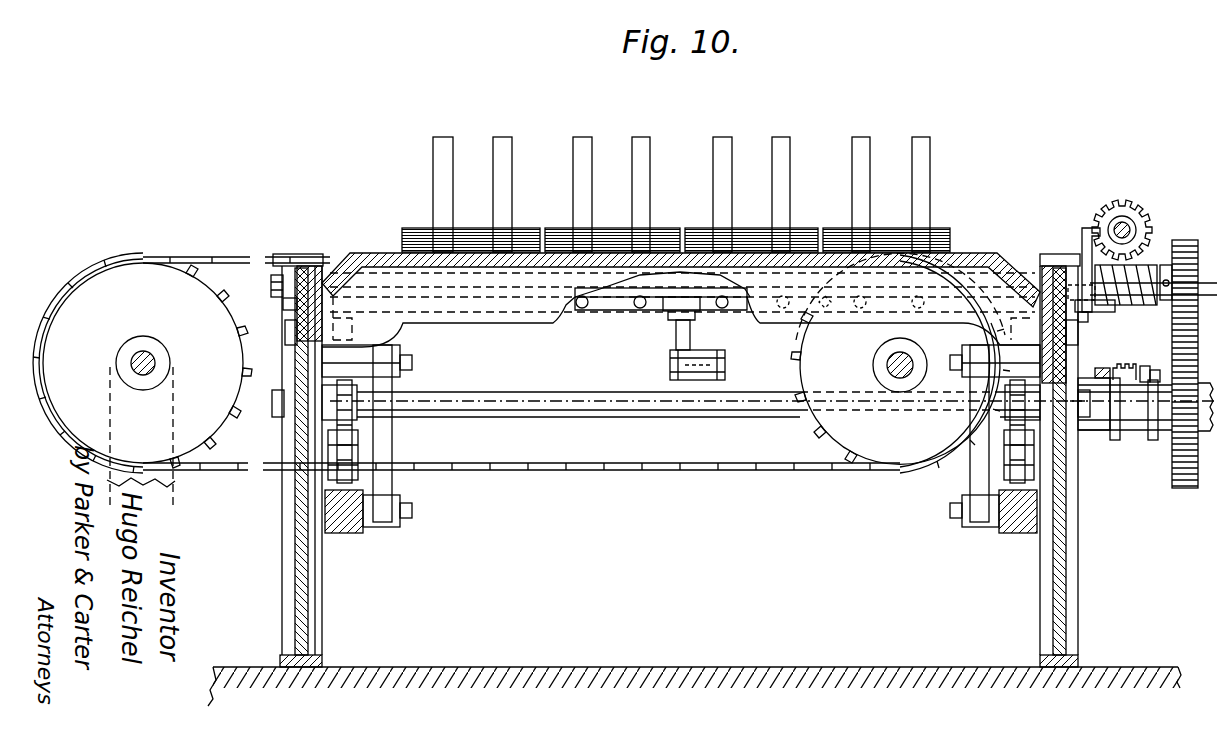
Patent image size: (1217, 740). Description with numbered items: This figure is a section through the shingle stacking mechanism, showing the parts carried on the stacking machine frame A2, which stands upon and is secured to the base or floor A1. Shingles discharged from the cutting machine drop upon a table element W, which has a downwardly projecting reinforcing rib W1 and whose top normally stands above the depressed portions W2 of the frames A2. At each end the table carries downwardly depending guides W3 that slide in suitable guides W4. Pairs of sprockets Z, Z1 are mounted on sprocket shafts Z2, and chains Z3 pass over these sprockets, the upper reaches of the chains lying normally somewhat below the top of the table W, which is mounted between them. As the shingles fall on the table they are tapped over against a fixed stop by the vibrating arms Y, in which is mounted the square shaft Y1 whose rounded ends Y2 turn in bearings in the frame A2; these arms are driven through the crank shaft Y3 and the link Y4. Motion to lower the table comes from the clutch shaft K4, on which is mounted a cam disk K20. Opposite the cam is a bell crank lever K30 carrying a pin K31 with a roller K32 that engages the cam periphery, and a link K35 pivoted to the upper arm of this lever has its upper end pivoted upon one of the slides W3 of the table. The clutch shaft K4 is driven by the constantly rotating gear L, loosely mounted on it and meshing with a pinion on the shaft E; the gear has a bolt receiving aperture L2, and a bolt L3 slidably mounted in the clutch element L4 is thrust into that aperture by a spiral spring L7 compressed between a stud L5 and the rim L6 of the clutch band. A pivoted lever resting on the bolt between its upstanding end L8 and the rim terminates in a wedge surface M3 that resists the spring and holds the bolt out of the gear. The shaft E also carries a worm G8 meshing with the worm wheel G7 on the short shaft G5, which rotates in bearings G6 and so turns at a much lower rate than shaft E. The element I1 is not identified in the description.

The base or floor A1 is at (520, 667).
The stacking machine frame A2 is at (310, 588).
The shaft E is at (620, 290).
The short shaft G5 is at (1120, 225).
The bearings G6 is at (1112, 226).
The worm wheel G7 is at (1125, 222).
The worm G8 is at (1140, 268).
The shaft I1 is at (1178, 280).
The clutch shaft K4 is at (613, 422).
The cam disk K20 is at (337, 480).
The bell crank lever K30 is at (345, 533).
The pin K31 is at (358, 478).
The roller K32 is at (375, 400).
The link K35 is at (392, 437).
The gear L is at (1186, 488).
The bolt receiving aperture L2 is at (1155, 440).
The bolt L3 is at (1155, 372).
The clutch element L4 is at (1143, 433).
The stud L5 is at (1145, 366).
The rim L6 is at (1118, 440).
The spiral spring L7 is at (1125, 367).
The upstanding end L8 is at (1098, 370).
The wedge surface M3 is at (1108, 382).
The table element W is at (377, 253).
The reinforcing rib W1 is at (518, 325).
The depressed portions W2 is at (308, 268).
The guides W3 is at (296, 333).
The guides W4 is at (330, 395).
The vibrating arms Y is at (492, 138).
The square shaft Y1 is at (606, 307).
The rounded ends Y2 is at (278, 306).
The crank shaft Y3 is at (690, 333).
The link Y4 is at (702, 382).
The sprockets Z is at (798, 364).
The sprockets Z1 is at (228, 428).
The sprocket shafts Z2 is at (138, 352).
The chains Z3 is at (197, 262).